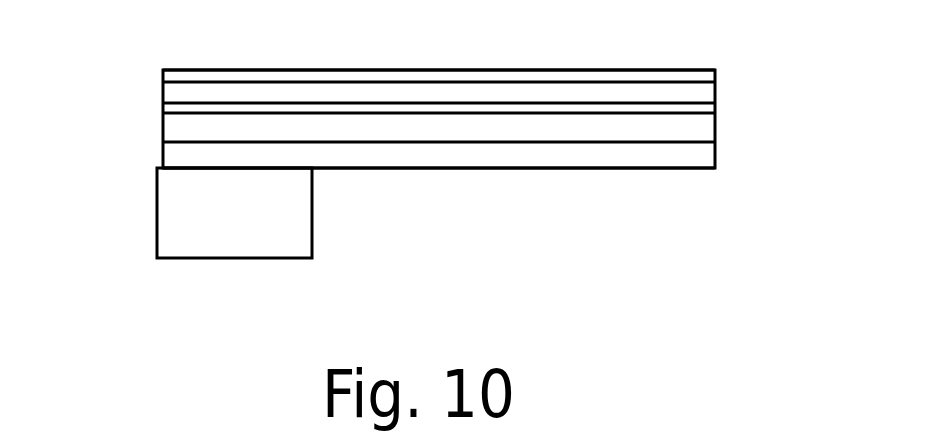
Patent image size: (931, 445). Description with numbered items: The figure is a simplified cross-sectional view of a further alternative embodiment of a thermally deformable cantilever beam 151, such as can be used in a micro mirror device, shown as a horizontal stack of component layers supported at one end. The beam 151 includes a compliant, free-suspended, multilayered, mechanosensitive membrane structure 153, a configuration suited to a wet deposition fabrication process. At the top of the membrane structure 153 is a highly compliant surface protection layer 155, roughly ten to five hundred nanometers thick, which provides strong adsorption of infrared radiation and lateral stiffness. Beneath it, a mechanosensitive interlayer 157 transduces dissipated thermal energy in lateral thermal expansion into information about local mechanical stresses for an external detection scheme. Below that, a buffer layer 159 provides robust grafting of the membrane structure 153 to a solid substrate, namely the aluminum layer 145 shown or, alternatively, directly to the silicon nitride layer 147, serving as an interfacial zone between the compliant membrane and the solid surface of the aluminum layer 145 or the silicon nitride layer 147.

The thermally deformable cantilever beam 151 is at (117, 67).
The membrane structure 153 is at (730, 68).
The surface protection layer 155 is at (288, 73).
The mechanosensitive interlayer 157 is at (417, 93).
The buffer layer 159 is at (533, 110).
The aluminum layer 145 is at (617, 132).
The silicon nitride layer 147 is at (477, 160).